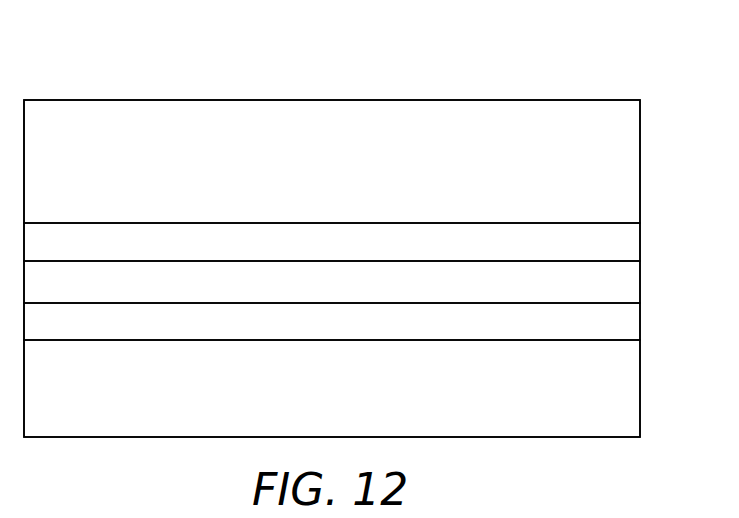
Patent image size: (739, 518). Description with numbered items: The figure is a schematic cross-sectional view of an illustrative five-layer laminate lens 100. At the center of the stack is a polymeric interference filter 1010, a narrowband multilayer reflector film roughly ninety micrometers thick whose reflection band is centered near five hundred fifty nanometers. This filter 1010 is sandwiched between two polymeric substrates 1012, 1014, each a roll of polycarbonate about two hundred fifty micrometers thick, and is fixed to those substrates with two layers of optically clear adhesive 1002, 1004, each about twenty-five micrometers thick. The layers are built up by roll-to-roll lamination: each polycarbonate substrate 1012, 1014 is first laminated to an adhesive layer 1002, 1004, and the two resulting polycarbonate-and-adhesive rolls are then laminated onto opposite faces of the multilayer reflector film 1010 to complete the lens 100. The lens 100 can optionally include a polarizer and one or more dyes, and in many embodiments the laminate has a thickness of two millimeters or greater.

The polycarbonate lens 100 is at (556, 42).
The polymeric substrate 1012 is at (318, 170).
The optically clear adhesive 1002 is at (627, 242).
The polymeric interference filter 1010 is at (627, 279).
The optically clear adhesive 1004 is at (627, 318).
The polymeric substrate 1014 is at (318, 395).